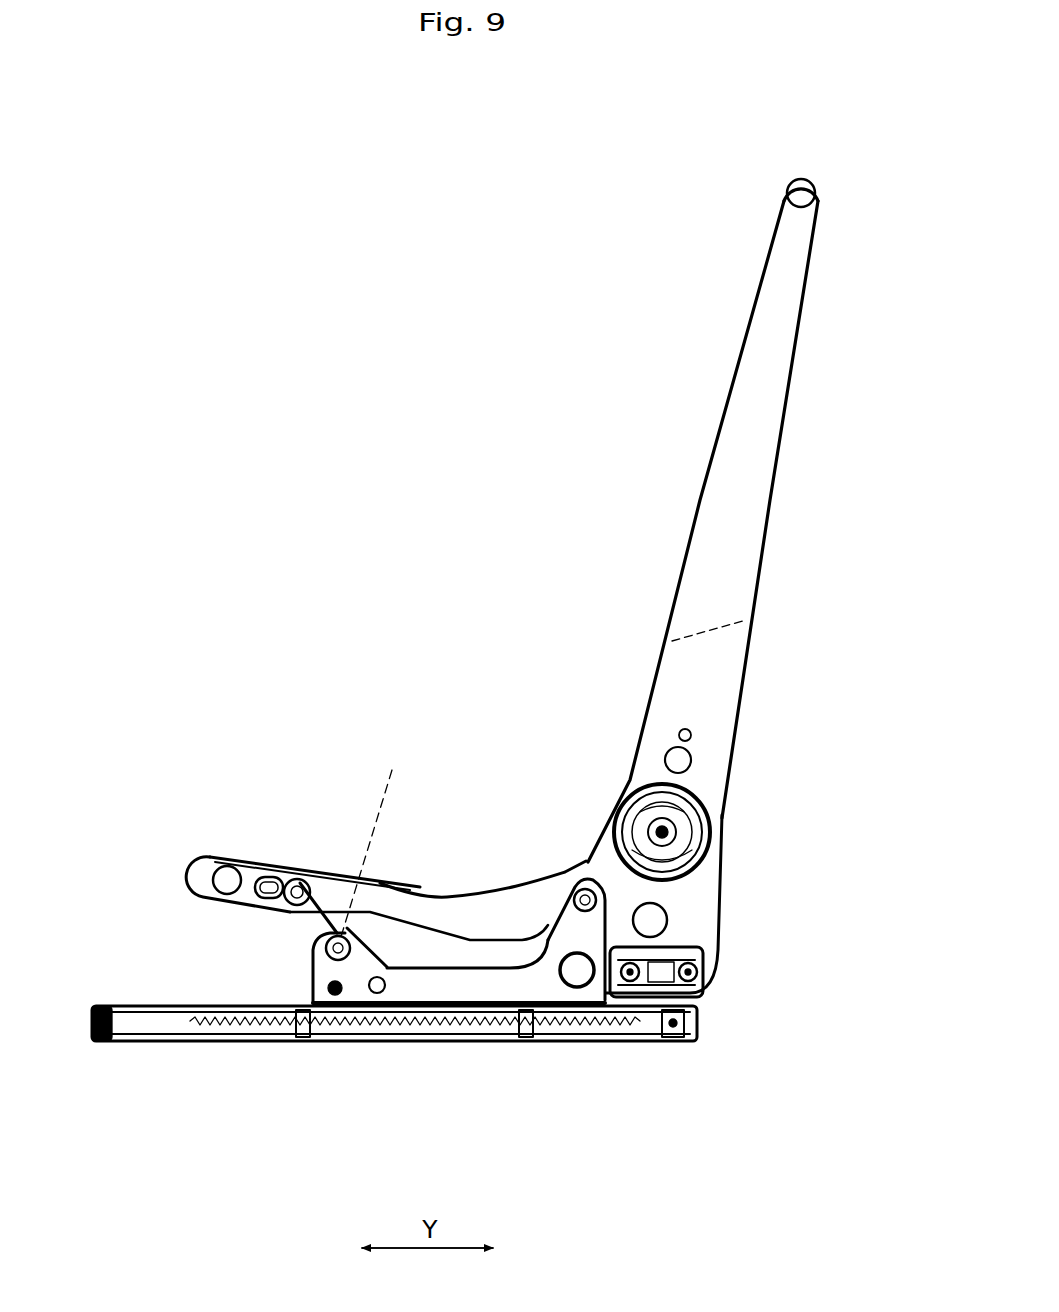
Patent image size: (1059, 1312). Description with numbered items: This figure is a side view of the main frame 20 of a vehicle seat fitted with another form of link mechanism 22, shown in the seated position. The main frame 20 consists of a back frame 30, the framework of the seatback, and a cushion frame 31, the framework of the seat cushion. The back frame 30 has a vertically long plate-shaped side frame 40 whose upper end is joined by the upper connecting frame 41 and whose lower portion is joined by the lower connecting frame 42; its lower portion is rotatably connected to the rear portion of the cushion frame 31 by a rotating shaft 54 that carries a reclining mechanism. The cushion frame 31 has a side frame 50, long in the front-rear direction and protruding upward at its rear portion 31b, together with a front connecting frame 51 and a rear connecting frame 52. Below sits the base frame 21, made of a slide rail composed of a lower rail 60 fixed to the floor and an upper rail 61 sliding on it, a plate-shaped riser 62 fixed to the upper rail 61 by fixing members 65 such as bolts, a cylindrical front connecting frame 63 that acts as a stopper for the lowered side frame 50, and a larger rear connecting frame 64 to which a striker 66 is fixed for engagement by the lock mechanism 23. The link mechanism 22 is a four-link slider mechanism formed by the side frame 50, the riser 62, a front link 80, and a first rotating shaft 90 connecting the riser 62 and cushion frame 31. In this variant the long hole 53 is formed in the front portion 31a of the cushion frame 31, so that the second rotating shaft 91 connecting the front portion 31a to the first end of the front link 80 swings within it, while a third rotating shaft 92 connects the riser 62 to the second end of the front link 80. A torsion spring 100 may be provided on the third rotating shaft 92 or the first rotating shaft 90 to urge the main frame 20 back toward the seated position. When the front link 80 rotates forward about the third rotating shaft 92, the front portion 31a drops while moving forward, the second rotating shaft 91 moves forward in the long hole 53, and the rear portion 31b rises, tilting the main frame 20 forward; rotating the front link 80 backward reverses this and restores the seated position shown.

The main frame 20 is at (764, 645).
The base frame 21 is at (589, 1058).
The link mechanism 22 is at (190, 945).
The lock mechanism 23 is at (722, 1003).
The back frame 30 is at (784, 478).
The cushion frame 31 is at (449, 884).
The front portion of the cushion frame 31a is at (253, 872).
The rear portion of the cushion frame 31b is at (698, 890).
The side frame 40 is at (712, 680).
The upper connecting frame 41 is at (808, 178).
The lower connecting frame 42 is at (692, 760).
The side frame 50 is at (462, 915).
The front connecting frame 51 is at (230, 866).
The rear connecting frame 52 is at (668, 920).
The long hole 53 is at (272, 877).
The rotating shaft 54 is at (722, 826).
The lower rail 60 is at (378, 1043).
The upper rail 61 is at (296, 1005).
The riser 62 is at (452, 1042).
The front connecting frame 63 is at (403, 1042).
The rear connecting frame 64 is at (550, 1042).
The fixing member 65 is at (302, 1042).
The striker 66 is at (674, 1042).
The front link 80 is at (317, 923).
The first rotating shaft 90 is at (574, 878).
The second rotating shaft 91 is at (301, 879).
The third rotating shaft 92 is at (378, 977).
The torsion spring 100 is at (382, 839).